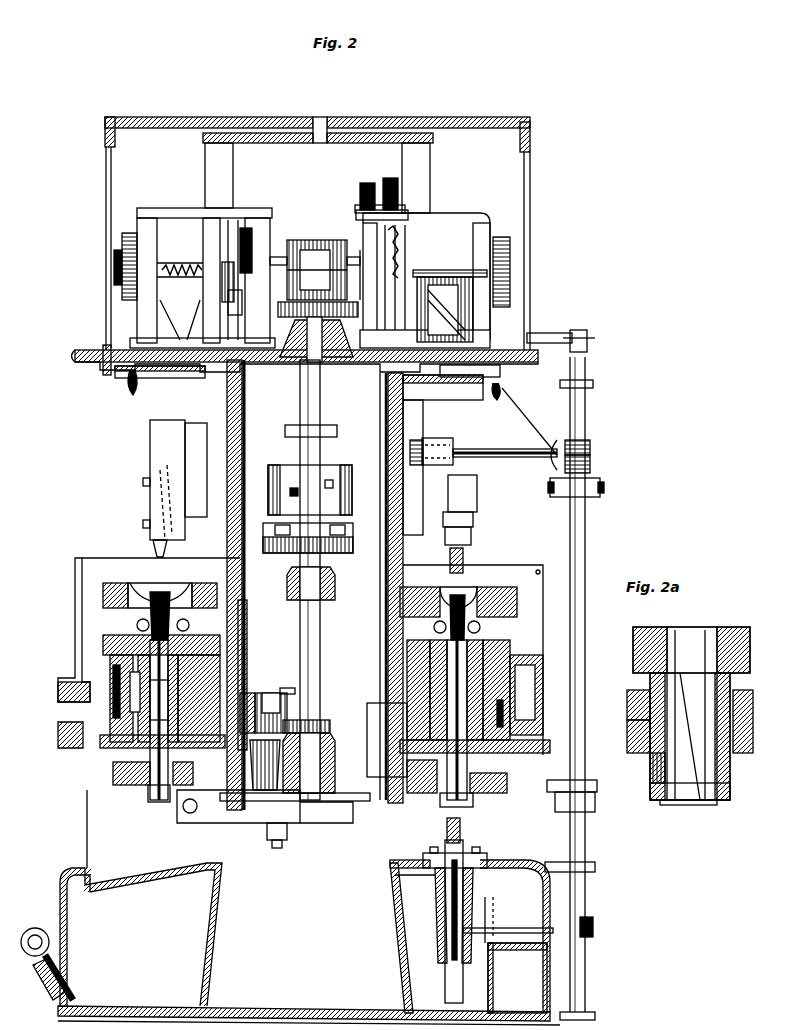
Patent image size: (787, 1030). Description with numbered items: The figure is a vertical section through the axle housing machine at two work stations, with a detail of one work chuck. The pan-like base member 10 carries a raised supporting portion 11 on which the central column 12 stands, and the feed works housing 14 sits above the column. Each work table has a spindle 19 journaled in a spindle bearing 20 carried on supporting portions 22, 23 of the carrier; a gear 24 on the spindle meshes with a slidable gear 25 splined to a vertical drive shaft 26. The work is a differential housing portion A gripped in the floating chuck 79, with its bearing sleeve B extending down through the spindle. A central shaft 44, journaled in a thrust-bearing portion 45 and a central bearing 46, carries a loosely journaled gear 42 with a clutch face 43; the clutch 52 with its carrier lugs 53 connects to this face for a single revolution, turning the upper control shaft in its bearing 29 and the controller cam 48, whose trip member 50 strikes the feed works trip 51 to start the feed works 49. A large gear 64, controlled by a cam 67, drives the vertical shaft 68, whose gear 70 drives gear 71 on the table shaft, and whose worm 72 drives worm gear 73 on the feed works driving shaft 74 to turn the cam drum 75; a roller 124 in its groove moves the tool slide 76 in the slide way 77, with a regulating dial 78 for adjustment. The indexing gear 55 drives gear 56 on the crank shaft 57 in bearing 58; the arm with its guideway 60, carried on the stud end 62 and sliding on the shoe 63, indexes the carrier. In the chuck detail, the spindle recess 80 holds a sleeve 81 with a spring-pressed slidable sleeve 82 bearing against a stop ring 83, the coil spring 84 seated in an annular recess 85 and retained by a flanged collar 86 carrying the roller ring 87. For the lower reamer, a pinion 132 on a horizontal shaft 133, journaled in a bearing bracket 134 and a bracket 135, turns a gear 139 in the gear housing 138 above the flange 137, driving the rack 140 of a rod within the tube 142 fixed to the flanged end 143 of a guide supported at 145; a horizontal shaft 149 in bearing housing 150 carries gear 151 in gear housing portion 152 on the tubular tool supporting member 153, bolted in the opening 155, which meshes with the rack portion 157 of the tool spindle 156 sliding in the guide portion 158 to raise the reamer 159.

In FIG. 2, the base member 10 is at (222, 903).
In FIG. 2, the supporting portion 11 is at (385, 825).
In FIG. 2, the central column 12 is at (225, 551).
In FIG. 2, the feed works housing 14 is at (528, 240).
In FIG. 2, the spindle 19 is at (112, 703).
In FIG. 2A, the spindle 19 is at (730, 628).
In FIG. 2, the spindle bearing 20 is at (105, 668).
In FIG. 2, the supporting portion 22 is at (332, 692).
In FIG. 2, the supporting portion 23 is at (118, 788).
In FIG. 2, the gear 24 is at (100, 748).
In FIG. 2, the slidable gear 25 is at (182, 745).
In FIG. 2, the vertical drive shaft 26 is at (243, 628).
In FIG. 2, the bearing 29 is at (290, 332).
In FIG. 2, the gear 42 is at (285, 553).
In FIG. 2, the clutch face 43 is at (270, 537).
In FIG. 2, the central shaft 44 is at (321, 631).
In FIG. 2, the thrust-bearing portion 45 is at (336, 752).
In FIG. 2, the central bearing 46 is at (327, 595).
In FIG. 2, the controller cam 48 is at (297, 244).
In FIG. 2, the feed works 49 is at (450, 222).
In FIG. 2, the trip member 50 is at (358, 252).
In FIG. 2, the feed works trip 51 is at (346, 240).
In FIG. 2, the clutch 52 is at (310, 490).
In FIG. 2, the carrier lug 53 is at (288, 492).
In FIG. 2, the gear 55 is at (330, 720).
In FIG. 2, the gear 56 is at (285, 690).
In FIG. 2, the crank shaft 57 is at (268, 693).
In FIG. 2, the bearing 58 is at (247, 693).
In FIG. 2, the guideway 60 is at (217, 822).
In FIG. 2, the stud end 62 is at (278, 841).
In FIG. 2, the shoe 63 is at (325, 824).
In FIG. 2, the large gear 64 is at (265, 300).
In FIG. 2, the cam 67 is at (303, 262).
In FIG. 2, the vertical shaft 68 is at (375, 198).
In FIG. 2, the gear 70 is at (357, 200).
In FIG. 2, the gear 71 is at (400, 200).
In FIG. 2, the worm 72 is at (234, 288).
In FIG. 2, the worm gear 73 is at (246, 257).
In FIG. 2, the feed works driving shaft 74 is at (225, 283).
In FIG. 2, the cam drum 75 is at (445, 309).
In FIG. 2, the tool slide 76 is at (155, 458).
In FIG. 2, the slide way 77 is at (410, 510).
In FIG. 2, the regulating dial 78 is at (150, 385).
In FIG. 2, the chuck 79 is at (118, 604).
In FIG. 2A, the recess 80 is at (650, 678).
In FIG. 2A, the sleeve 81 is at (635, 712).
In FIG. 2A, the slidable sleeve 82 is at (635, 729).
In FIG. 2A, the stop ring 83 is at (677, 665).
In FIG. 2A, the coil spring 84 is at (650, 760).
In FIG. 2A, the annular recess 85 is at (675, 765).
In FIG. 2, the flanged collar 86 is at (157, 804).
In FIG. 2A, the flanged collar 86 is at (657, 800).
In FIG. 2A, the roller ring 87 is at (650, 782).
In FIG. 2, the roller 124 is at (418, 276).
In FIG. 2, the pinion 132 is at (445, 468).
In FIG. 2, the horizontal shaft 133 is at (527, 470).
In FIG. 2, the bearing bracket 134 is at (430, 428).
In FIG. 2, the bracket 135 is at (540, 420).
In FIG. 2, the flange 137 is at (602, 491).
In FIG. 2, the gear housing 138 is at (590, 468).
In FIG. 2, the gear 139 is at (590, 446).
In FIG. 2, the rack 140 is at (587, 418).
In FIG. 2, the tube 142 is at (586, 549).
In FIG. 2, the flanged end 143 is at (590, 806).
In FIG. 2, the support 145 is at (520, 927).
In FIG. 2, the horizontal shaft 149 is at (512, 940).
In FIG. 2, the bearing housing 150 is at (594, 930).
In FIG. 2, the gear 151 is at (440, 940).
In FIG. 2, the gear housing portion 152 is at (440, 925).
In FIG. 2, the tubular tool supporting member 153 is at (440, 900).
In FIG. 2, the opening 155 is at (440, 875).
In FIG. 2, the tool spindle 156 is at (446, 986).
In FIG. 2, the rack portion 157 is at (446, 968).
In FIG. 2, the guide portion 158 is at (472, 853).
In FIG. 2, the reamer 159 is at (461, 829).
In FIG. 2, the differential housing portion A is at (462, 600).
In FIG. 2, the bearing sleeve B is at (522, 655).